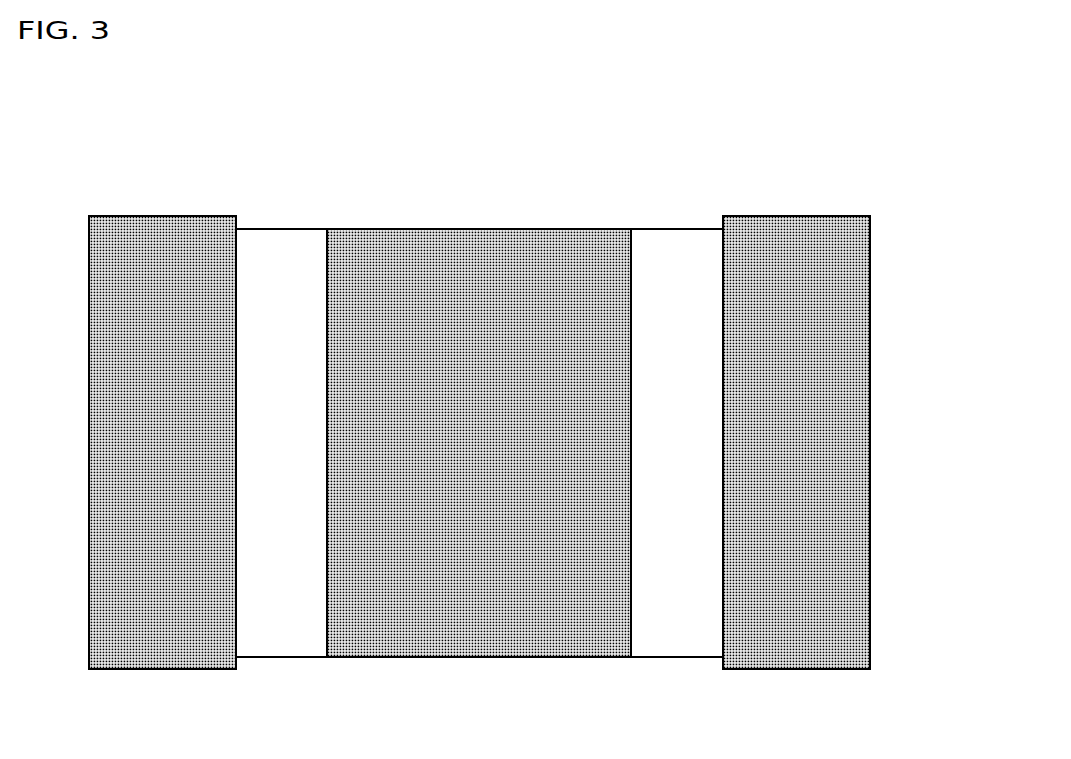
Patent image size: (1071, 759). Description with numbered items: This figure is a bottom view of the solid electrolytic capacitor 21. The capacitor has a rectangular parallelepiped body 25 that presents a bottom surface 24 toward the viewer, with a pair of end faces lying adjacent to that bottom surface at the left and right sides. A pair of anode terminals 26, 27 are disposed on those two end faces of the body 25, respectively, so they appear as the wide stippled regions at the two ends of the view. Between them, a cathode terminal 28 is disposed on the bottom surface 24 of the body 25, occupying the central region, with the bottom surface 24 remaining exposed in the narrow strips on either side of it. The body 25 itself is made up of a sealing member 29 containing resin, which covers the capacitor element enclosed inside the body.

The solid electrolytic capacitor 21 is at (441, 159).
The bottom surface 24 is at (668, 248).
The body 25 is at (273, 228).
The anode terminal 26 is at (102, 420).
The anode terminal 27 is at (850, 404).
The cathode terminal 28 is at (483, 638).
The sealing member 29 is at (310, 638).